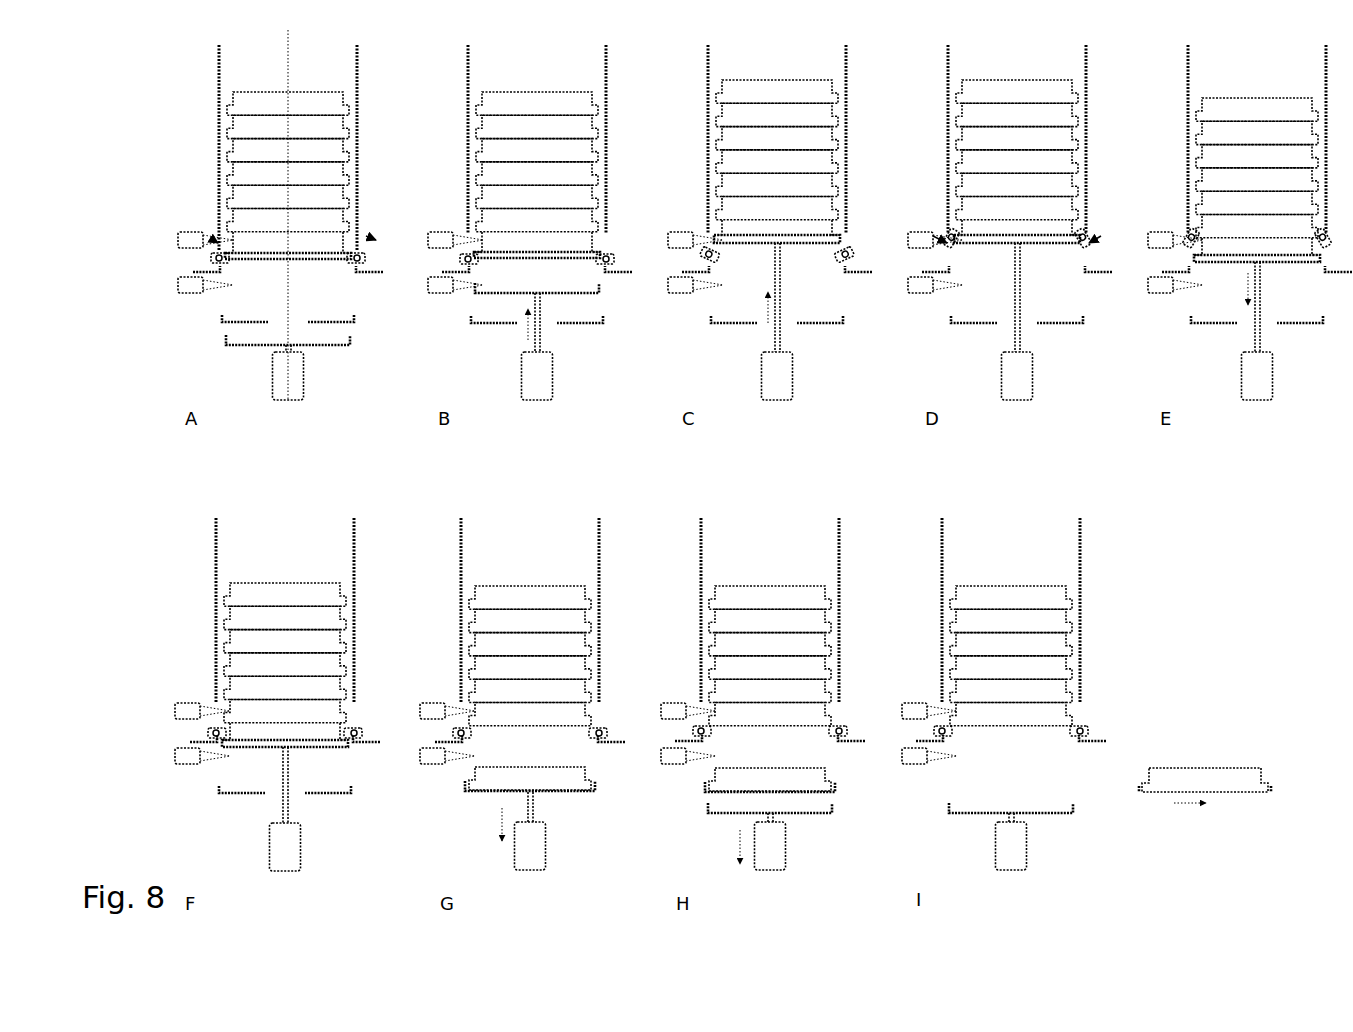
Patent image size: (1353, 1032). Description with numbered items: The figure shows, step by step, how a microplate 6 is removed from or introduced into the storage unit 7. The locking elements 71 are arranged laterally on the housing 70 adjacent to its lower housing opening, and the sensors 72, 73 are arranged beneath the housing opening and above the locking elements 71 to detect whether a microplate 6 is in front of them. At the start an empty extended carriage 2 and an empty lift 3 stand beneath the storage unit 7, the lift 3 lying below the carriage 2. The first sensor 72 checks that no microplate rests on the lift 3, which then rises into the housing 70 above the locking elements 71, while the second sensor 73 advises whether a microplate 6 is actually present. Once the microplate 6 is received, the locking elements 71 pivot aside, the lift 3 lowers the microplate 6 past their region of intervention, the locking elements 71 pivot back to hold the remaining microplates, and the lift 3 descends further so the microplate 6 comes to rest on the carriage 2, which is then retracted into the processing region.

In FIG. 8A, the carriage 2 is at (318, 334).
In FIG. 8B, the carriage 2 is at (537, 303).
In FIG. 8C, the carriage 2 is at (777, 319).
In FIG. 8D, the carriage 2 is at (1017, 319).
In FIG. 8E, the carriage 2 is at (1257, 319).
In FIG. 8F, the carriage 2 is at (285, 789).
In FIG. 8G, the carriage 2 is at (530, 779).
In FIG. 8H, the carriage 2 is at (770, 790).
In FIG. 8I, the carriage 2 is at (1110, 790).
In FIG. 8A, the lift 3 is at (324, 378).
In FIG. 8B, the lift 3 is at (537, 346).
In FIG. 8C, the lift 3 is at (777, 321).
In FIG. 8D, the lift 3 is at (1017, 321).
In FIG. 8E, the lift 3 is at (1257, 331).
In FIG. 8F, the lift 3 is at (285, 809).
In FIG. 8G, the lift 3 is at (524, 831).
In FIG. 8H, the lift 3 is at (763, 841).
In FIG. 8I, the lift 3 is at (1011, 841).
In FIG. 8A, the microplate 6 is at (324, 166).
In FIG. 8B, the microplate 6 is at (537, 175).
In FIG. 8C, the microplate 6 is at (777, 161).
In FIG. 8D, the microplate 6 is at (1017, 161).
In FIG. 8E, the microplate 6 is at (1257, 180).
In FIG. 8F, the microplate 6 is at (285, 665).
In FIG. 8G, the microplate 6 is at (530, 656).
In FIG. 8H, the microplate 6 is at (770, 656).
In FIG. 8I, the microplate 6 is at (1011, 656).
In FIG. 8A, the storage unit 7 is at (239, 184).
In FIG. 8A, the housing 70 is at (246, 147).
In FIG. 8B, the housing 70 is at (537, 139).
In FIG. 8C, the housing 70 is at (777, 139).
In FIG. 8D, the housing 70 is at (1017, 139).
In FIG. 8E, the housing 70 is at (1257, 139).
In FIG. 8F, the housing 70 is at (285, 610).
In FIG. 8G, the housing 70 is at (530, 610).
In FIG. 8H, the housing 70 is at (770, 610).
In FIG. 8I, the housing 70 is at (1011, 610).
In FIG. 8A, the locking elements 71 is at (252, 258).
In FIG. 8B, the locking elements 71 is at (537, 263).
In FIG. 8C, the locking elements 71 is at (777, 259).
In FIG. 8D, the locking elements 71 is at (1017, 250).
In FIG. 8E, the locking elements 71 is at (1257, 250).
In FIG. 8F, the locking elements 71 is at (285, 735).
In FIG. 8G, the locking elements 71 is at (530, 735).
In FIG. 8H, the locking elements 71 is at (770, 733).
In FIG. 8I, the locking elements 71 is at (1011, 733).
In FIG. 8A, the first sensor 72 is at (177, 303).
In FIG. 8B, the first sensor 72 is at (455, 285).
In FIG. 8C, the first sensor 72 is at (695, 285).
In FIG. 8D, the first sensor 72 is at (935, 285).
In FIG. 8E, the first sensor 72 is at (1175, 285).
In FIG. 8F, the first sensor 72 is at (202, 756).
In FIG. 8G, the first sensor 72 is at (447, 756).
In FIG. 8H, the first sensor 72 is at (688, 756).
In FIG. 8I, the first sensor 72 is at (929, 756).
In FIG. 8A, the second sensor 73 is at (248, 210).
In FIG. 8B, the second sensor 73 is at (455, 240).
In FIG. 8C, the second sensor 73 is at (695, 240).
In FIG. 8D, the second sensor 73 is at (1004, 240).
In FIG. 8E, the second sensor 73 is at (1175, 240).
In FIG. 8F, the second sensor 73 is at (202, 711).
In FIG. 8G, the second sensor 73 is at (447, 711).
In FIG. 8H, the second sensor 73 is at (688, 711).
In FIG. 8I, the second sensor 73 is at (929, 711).